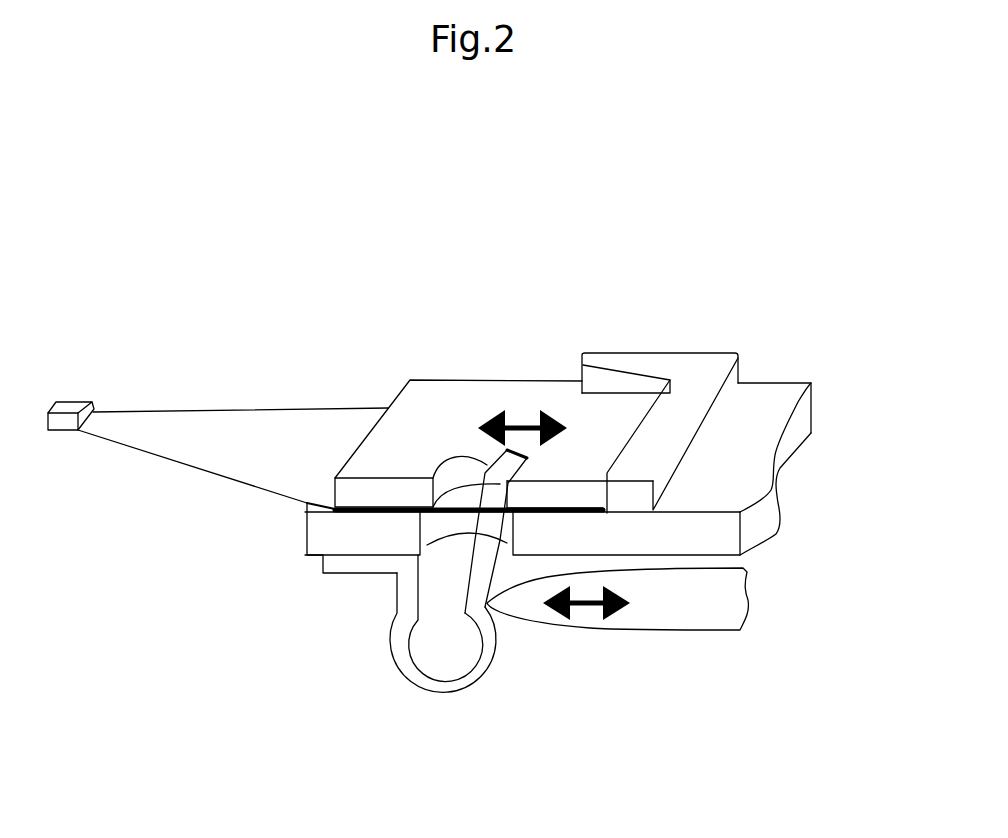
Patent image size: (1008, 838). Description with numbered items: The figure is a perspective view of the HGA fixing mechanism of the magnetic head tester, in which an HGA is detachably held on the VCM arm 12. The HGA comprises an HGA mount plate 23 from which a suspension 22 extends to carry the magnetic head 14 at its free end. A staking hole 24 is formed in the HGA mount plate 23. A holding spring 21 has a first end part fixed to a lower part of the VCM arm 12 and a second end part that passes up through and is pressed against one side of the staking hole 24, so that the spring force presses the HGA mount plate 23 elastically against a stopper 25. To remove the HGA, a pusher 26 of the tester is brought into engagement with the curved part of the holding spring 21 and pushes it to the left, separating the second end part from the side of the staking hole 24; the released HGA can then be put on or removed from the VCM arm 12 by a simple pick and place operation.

The VCM arm 12 is at (748, 462).
The magnetic head 14 is at (63, 430).
The holding spring 21 is at (405, 663).
The suspension 22 is at (242, 432).
The HGA mount plate 23 is at (415, 427).
The staking hole 24 is at (459, 473).
The stopper 25 is at (692, 385).
The pusher 26 is at (685, 610).